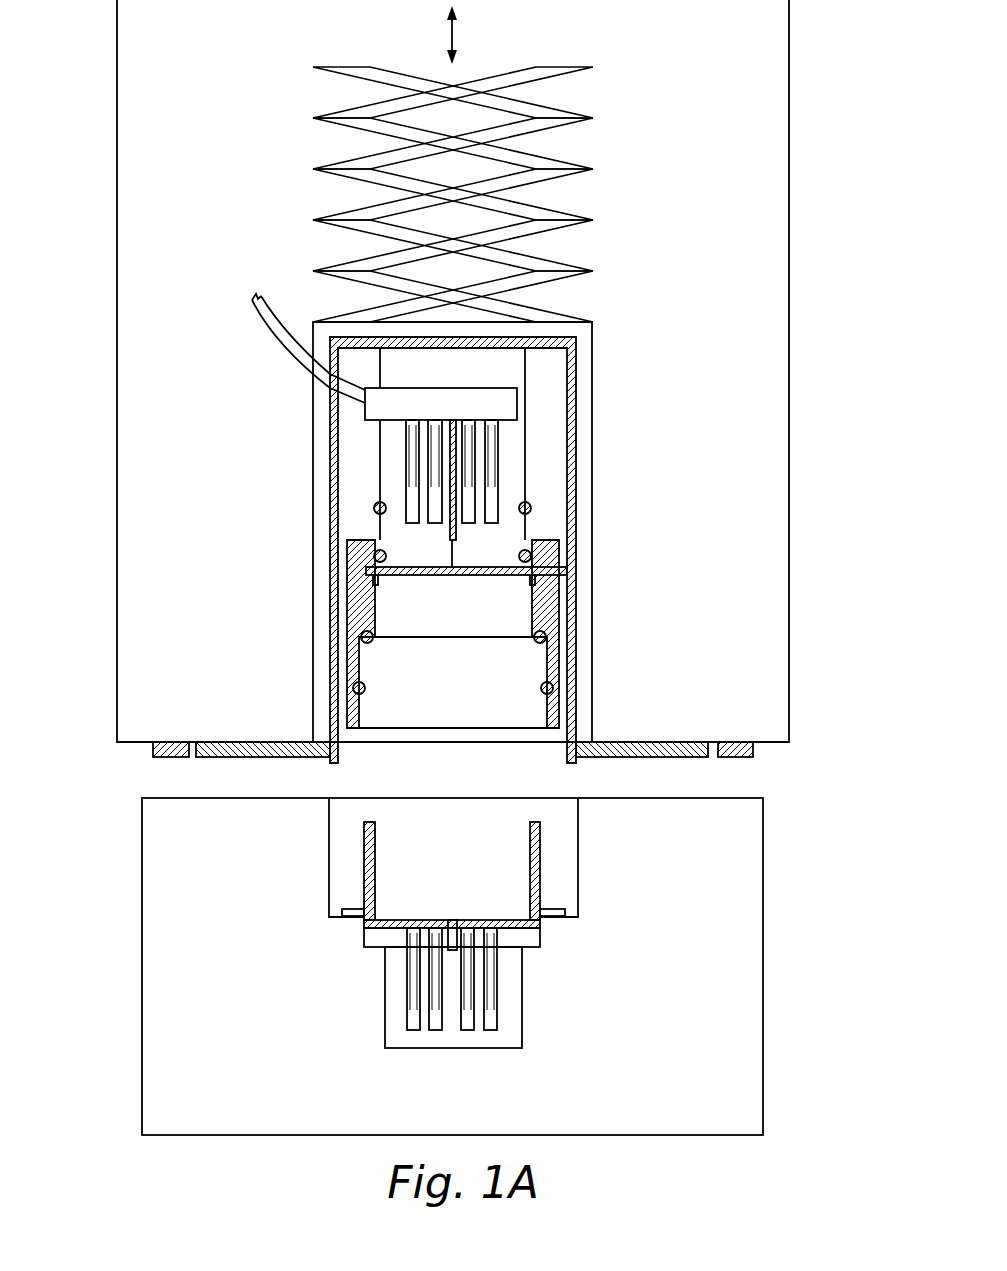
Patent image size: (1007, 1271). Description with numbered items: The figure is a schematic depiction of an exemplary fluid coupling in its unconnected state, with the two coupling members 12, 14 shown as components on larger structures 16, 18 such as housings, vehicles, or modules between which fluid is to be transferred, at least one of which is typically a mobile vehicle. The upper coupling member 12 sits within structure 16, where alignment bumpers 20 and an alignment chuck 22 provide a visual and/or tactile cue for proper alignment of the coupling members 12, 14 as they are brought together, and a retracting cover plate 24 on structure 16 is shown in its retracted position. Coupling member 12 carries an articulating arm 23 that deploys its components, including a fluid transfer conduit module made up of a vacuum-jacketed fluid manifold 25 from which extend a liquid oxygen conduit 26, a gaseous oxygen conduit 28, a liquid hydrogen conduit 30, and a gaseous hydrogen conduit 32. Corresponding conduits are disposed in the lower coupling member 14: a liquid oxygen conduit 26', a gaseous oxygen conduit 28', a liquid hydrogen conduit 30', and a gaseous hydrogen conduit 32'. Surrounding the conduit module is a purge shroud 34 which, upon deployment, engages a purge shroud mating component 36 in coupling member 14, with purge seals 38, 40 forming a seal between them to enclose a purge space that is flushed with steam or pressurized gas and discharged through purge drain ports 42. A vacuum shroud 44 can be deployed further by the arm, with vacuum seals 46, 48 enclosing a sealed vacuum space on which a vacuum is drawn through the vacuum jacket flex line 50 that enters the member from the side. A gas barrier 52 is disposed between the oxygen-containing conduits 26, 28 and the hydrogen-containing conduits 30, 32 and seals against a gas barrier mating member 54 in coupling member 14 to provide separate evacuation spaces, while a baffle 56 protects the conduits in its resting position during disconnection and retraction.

The coupling member 12 is at (450, 542).
The coupling member 14 is at (580, 878).
The larger structure 16 is at (790, 268).
The larger structure 18 is at (765, 907).
The alignment bumpers 20 is at (170, 757).
The alignment chuck 22 is at (330, 527).
The articulating arm 23 is at (552, 172).
The retracting cover plate 24 is at (282, 750).
The vacuum-jacketed fluid manifold 25 is at (400, 402).
The liquid oxygen conduit 26 is at (340, 471).
The gaseous oxygen conduit 28 is at (352, 471).
The liquid hydrogen conduit 30 is at (550, 469).
The gaseous hydrogen conduit 32 is at (556, 471).
The purge shroud 34 is at (355, 597).
The purge shroud mating component 36 is at (364, 872).
The purge seal 38 is at (367, 642).
The purge seal 40 is at (359, 694).
The purge drain ports 42 is at (352, 916).
The vacuum shroud 44 is at (527, 380).
The vacuum seal 46 is at (538, 508).
The vacuum seal 48 is at (560, 553).
The vacuum jacket flex line 50 is at (278, 343).
The gas barrier 52 is at (460, 530).
The gas barrier mating member 54 is at (453, 923).
The baffle 56 is at (458, 576).
The liquid oxygen conduit 26' is at (361, 989).
The gaseous oxygen conduit 28' is at (391, 1010).
The liquid hydrogen conduit 30' is at (519, 1010).
The gaseous hydrogen conduit 32' is at (541, 989).